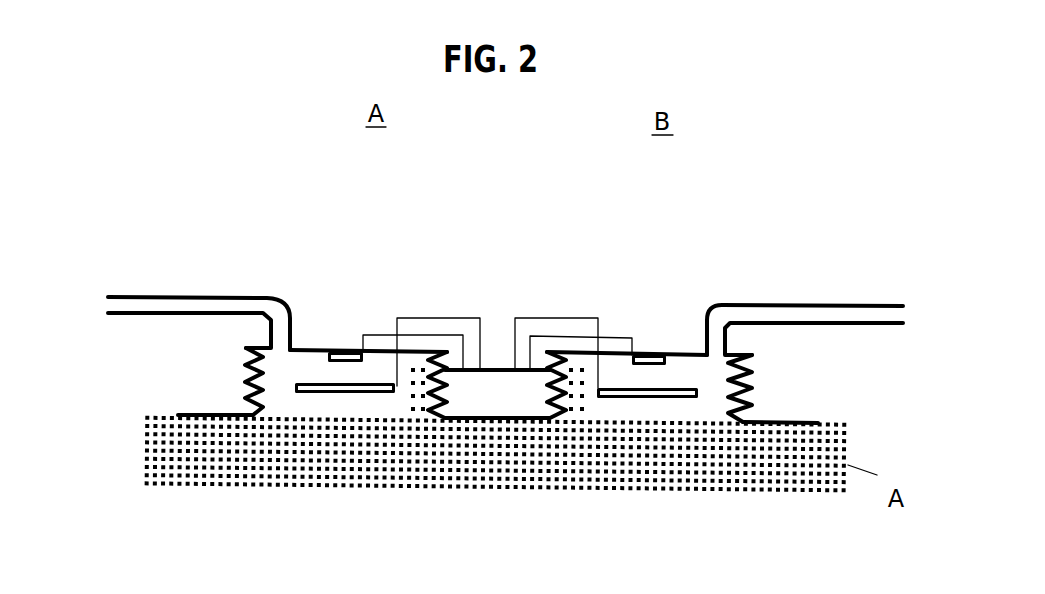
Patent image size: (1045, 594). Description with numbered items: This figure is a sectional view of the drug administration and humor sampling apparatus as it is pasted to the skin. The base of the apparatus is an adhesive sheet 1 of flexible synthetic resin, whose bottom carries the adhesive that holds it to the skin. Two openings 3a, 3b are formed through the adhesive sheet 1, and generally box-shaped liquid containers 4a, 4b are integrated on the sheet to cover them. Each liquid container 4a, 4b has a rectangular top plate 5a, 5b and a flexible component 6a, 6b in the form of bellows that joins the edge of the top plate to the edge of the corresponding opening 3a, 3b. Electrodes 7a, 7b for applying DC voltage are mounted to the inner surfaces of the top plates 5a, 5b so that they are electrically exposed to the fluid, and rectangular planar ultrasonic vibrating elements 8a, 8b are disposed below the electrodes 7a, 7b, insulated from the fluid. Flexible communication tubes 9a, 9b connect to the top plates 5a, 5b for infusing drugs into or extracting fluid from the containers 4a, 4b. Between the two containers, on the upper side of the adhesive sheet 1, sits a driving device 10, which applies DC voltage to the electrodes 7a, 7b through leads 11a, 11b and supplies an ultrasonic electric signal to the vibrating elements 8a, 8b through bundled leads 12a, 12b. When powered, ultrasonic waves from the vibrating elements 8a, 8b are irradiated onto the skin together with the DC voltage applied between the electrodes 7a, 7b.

The adhesive sheet 1 is at (793, 422).
The opening 3a is at (322, 410).
The opening 3b is at (632, 413).
The liquid container 4a is at (227, 392).
The liquid container 4b is at (760, 362).
The top plate 5a is at (305, 350).
The top plate 5b is at (690, 352).
The flexible component 6a is at (256, 377).
The flexible component 6b is at (738, 382).
The electrode for applying DC voltage 7a is at (344, 352).
The electrode for applying DC voltage 7b is at (653, 355).
The ultrasonic vibrating element 8a is at (353, 385).
The ultrasonic vibrating element 8b is at (668, 390).
The communication tube 9a is at (168, 295).
The communication tube 9b is at (818, 305).
The driving device 10 is at (490, 368).
The lead for applying DC voltage 11a is at (373, 335).
The lead for applying DC voltage 11b is at (615, 337).
The leads 12a is at (418, 318).
The leads 12b is at (530, 336).